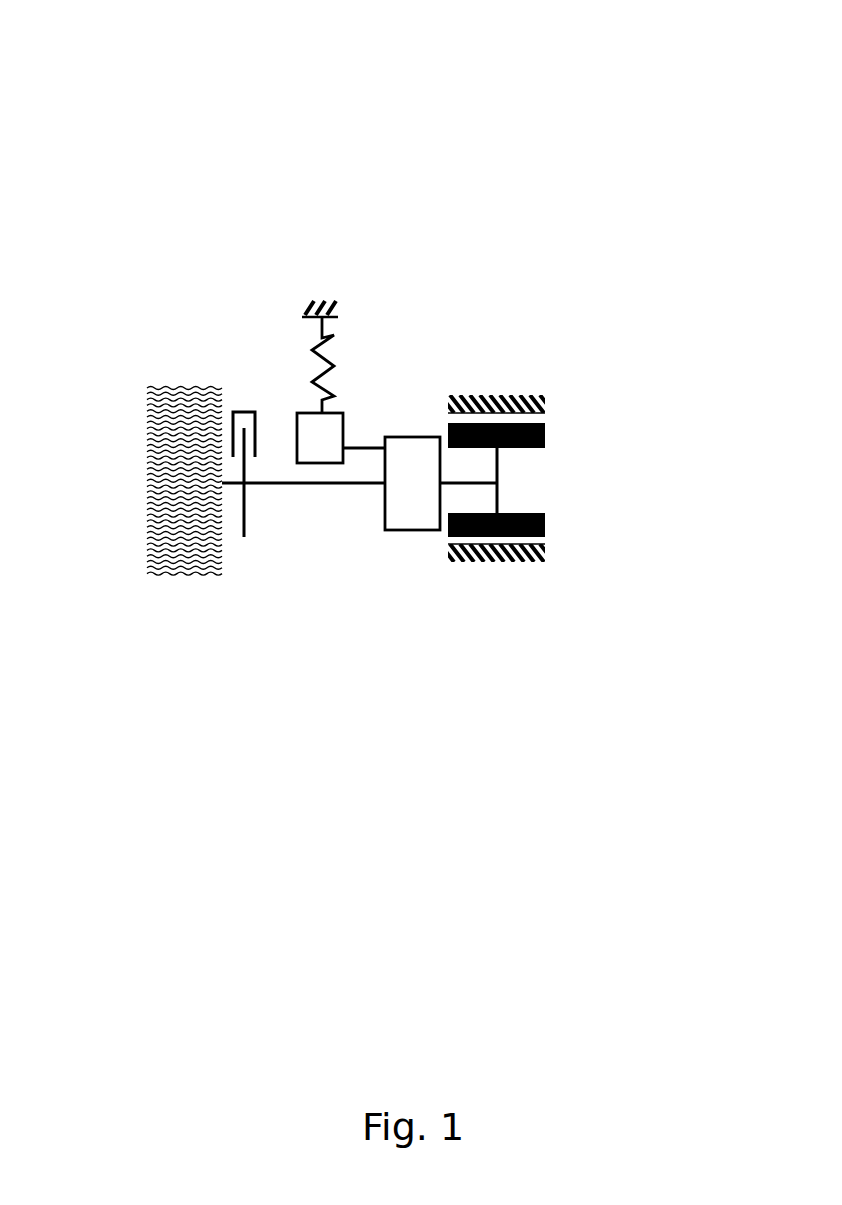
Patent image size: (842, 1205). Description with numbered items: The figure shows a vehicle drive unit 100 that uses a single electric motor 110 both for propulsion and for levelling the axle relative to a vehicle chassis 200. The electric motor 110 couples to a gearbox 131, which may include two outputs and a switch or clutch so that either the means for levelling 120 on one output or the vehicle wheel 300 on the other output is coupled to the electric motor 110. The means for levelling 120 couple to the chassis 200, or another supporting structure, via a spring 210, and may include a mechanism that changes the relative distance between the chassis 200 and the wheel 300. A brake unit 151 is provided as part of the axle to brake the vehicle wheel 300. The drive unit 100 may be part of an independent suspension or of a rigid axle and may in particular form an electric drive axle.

The drive unit 100 is at (172, 98).
The electric motor 110 is at (545, 435).
The means for levelling 120 is at (345, 415).
The gearbox 131 is at (385, 522).
The brake unit 151 is at (240, 410).
The vehicle chassis 200 is at (335, 307).
The spring 210 is at (317, 355).
The vehicle wheel 300 is at (162, 547).